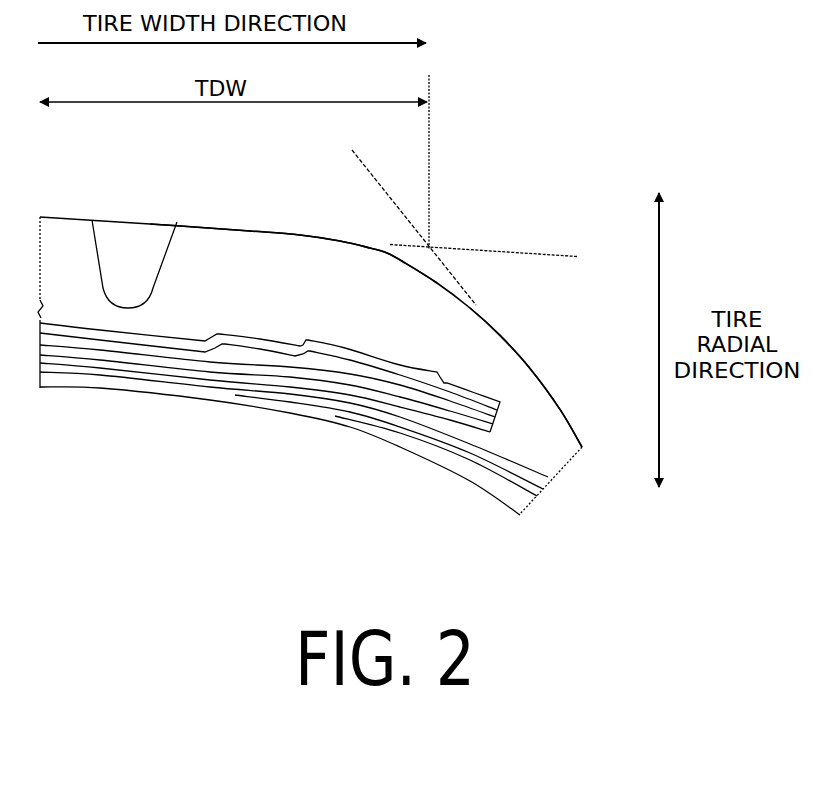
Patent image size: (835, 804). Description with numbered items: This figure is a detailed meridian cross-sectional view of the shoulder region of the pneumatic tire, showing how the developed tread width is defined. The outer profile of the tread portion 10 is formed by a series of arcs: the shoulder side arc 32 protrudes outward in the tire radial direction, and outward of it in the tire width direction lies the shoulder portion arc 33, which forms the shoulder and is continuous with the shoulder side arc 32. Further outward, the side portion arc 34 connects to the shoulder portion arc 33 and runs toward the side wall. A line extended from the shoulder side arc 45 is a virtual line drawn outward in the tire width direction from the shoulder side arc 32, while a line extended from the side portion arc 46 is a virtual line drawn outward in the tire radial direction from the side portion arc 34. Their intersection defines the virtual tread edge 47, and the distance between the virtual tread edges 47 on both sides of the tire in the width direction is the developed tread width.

The tread portion 10 is at (228, 248).
The shoulder side arc 32 is at (284, 236).
The shoulder portion arc 33 is at (378, 243).
The side portion arc 34 is at (523, 362).
The line extended from the shoulder side arc 45 is at (522, 250).
The line extended from the side portion arc 46 is at (383, 186).
The virtual tread edge 47 is at (432, 231).